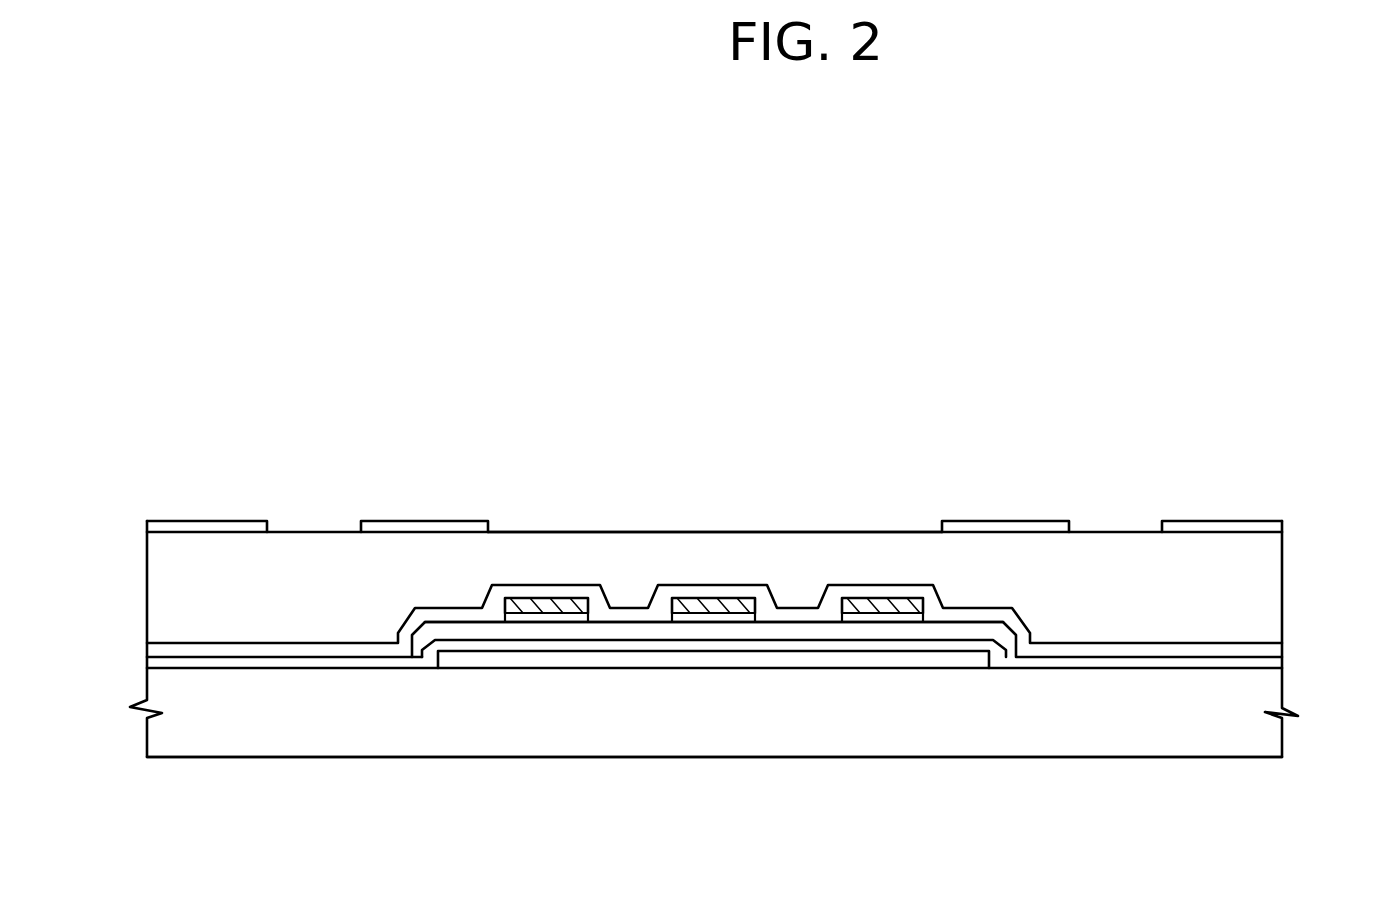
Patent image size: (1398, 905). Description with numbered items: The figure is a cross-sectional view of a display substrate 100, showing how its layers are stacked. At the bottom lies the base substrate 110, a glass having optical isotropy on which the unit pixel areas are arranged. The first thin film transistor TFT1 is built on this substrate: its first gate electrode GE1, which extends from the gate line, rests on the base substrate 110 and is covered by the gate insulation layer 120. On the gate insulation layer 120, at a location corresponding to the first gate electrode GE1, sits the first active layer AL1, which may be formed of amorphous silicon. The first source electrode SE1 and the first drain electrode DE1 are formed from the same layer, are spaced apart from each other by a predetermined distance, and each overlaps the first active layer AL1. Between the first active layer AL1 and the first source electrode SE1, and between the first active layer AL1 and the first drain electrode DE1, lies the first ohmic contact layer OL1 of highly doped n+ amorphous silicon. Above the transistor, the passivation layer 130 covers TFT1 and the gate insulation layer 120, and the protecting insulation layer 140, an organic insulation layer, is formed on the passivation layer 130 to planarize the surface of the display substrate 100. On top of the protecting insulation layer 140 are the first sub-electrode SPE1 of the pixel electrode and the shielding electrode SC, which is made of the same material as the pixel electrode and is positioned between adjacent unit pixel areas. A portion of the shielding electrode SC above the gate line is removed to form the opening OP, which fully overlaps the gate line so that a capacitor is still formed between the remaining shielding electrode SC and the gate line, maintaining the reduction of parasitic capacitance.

The display substrate 100 is at (737, 371).
The base substrate 110 is at (1278, 726).
The gate insulation layer 120 is at (1278, 663).
The passivation layer 130 is at (1278, 647).
The protecting insulation layer 140 is at (1278, 603).
The first sub-electrode SPE1 is at (147, 521).
The shielding electrode SC is at (428, 526).
The opening OP is at (719, 530).
The first thin film transistor TFT1 is at (714, 739).
The first gate electrode GE1 is at (801, 660).
The first active layer AL1 is at (626, 632).
The first ohmic contact layer OL1 is at (889, 620).
The first source electrode SE1 is at (547, 610).
The first drain electrode DE1 is at (713, 610).